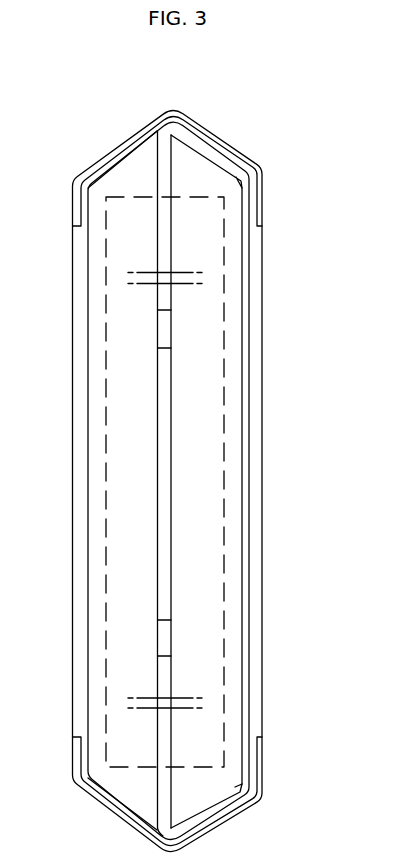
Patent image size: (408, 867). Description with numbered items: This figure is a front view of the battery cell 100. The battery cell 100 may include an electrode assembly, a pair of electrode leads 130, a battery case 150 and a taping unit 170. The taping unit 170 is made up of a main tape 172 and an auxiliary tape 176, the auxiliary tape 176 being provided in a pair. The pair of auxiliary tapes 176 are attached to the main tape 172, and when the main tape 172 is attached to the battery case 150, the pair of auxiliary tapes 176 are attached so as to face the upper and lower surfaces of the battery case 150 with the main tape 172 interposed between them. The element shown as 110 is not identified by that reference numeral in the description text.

The battery cell 100 is at (52, 125).
The electrode assembly 110 is at (222, 238).
The electrode lead 130 is at (165, 536).
The battery case 150 is at (232, 603).
The taping unit 170 is at (283, 314).
The main tape 172 is at (262, 462).
The auxiliary tape 176 is at (232, 146).